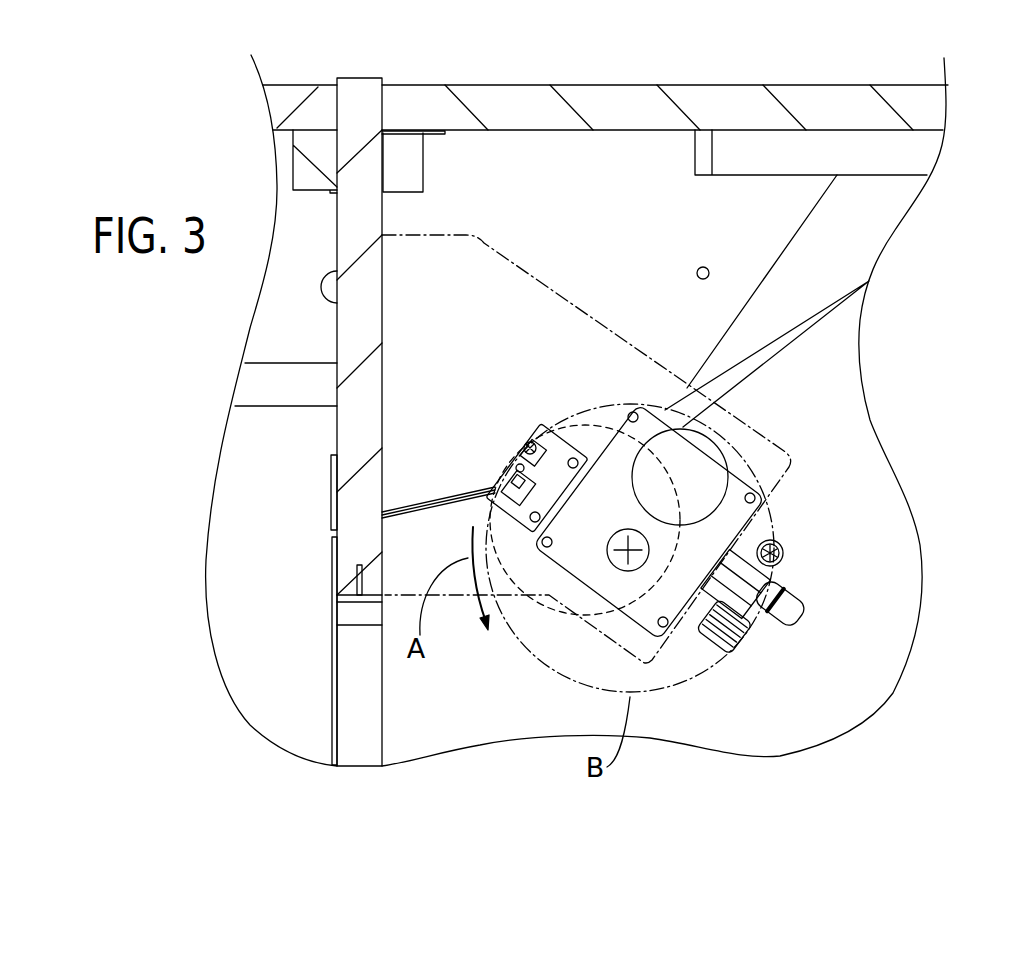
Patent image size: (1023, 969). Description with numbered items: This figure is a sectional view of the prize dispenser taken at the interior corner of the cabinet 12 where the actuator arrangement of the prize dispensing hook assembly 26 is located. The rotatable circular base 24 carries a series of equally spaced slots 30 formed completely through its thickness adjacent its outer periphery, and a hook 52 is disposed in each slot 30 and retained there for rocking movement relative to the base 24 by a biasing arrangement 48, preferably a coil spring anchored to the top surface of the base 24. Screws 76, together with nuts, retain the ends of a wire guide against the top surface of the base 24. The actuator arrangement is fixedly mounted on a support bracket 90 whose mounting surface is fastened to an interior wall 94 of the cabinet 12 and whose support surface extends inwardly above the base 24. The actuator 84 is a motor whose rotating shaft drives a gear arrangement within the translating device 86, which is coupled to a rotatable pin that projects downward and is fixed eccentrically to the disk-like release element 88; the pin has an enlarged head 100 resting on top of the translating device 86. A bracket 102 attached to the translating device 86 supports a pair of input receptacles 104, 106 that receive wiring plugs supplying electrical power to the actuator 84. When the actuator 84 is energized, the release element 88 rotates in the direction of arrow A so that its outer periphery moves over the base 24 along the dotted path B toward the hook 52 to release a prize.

The cabinet 12 is at (662, 85).
The rotatable circular base 24 is at (910, 628).
The prize dispensing hook assembly 26 is at (845, 521).
The slot 30 is at (768, 627).
The biasing arrangement 48 is at (716, 637).
The hook 52 is at (762, 585).
The screw 76 is at (717, 613).
The actuator 84 is at (682, 447).
The translating device 86 is at (742, 488).
The release element 88 is at (532, 563).
The support bracket 90 is at (562, 293).
The interior wall 94 is at (374, 312).
The enlarged head 100 is at (612, 547).
The bracket 102 is at (560, 457).
The input receptacle 104 is at (500, 491).
The input receptacle 106 is at (525, 453).